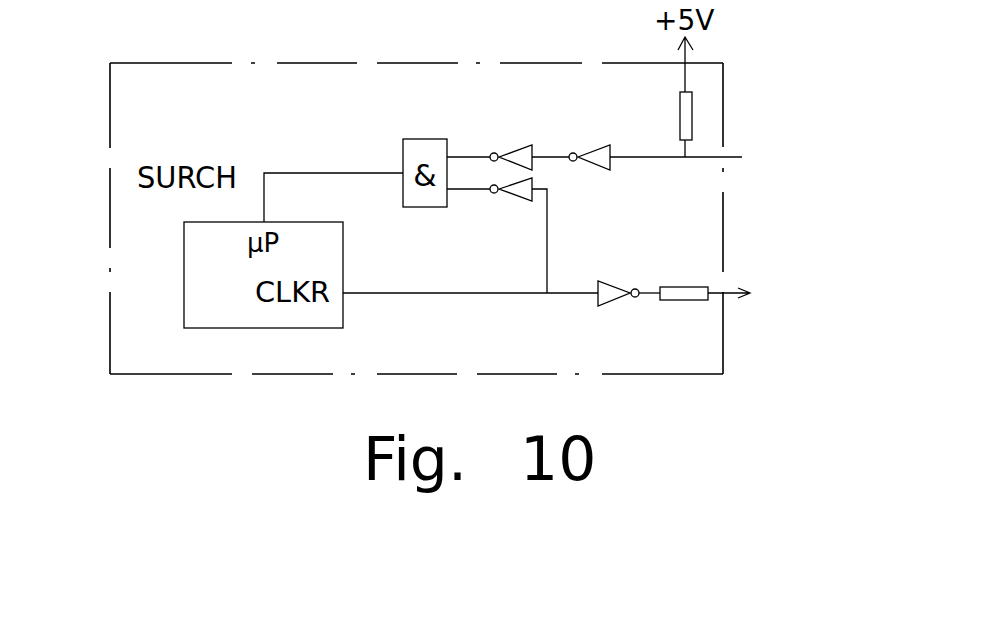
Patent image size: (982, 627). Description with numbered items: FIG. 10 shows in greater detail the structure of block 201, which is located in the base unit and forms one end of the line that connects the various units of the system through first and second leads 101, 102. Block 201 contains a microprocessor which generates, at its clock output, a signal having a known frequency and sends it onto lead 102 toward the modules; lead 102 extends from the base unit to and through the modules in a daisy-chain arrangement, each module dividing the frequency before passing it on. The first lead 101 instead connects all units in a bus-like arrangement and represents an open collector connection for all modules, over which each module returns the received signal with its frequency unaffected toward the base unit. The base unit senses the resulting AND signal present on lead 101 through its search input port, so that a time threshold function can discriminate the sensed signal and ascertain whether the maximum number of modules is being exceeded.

The block 201 is at (133, 107).
The first lead 101 is at (740, 158).
The second lead 102 is at (731, 297).